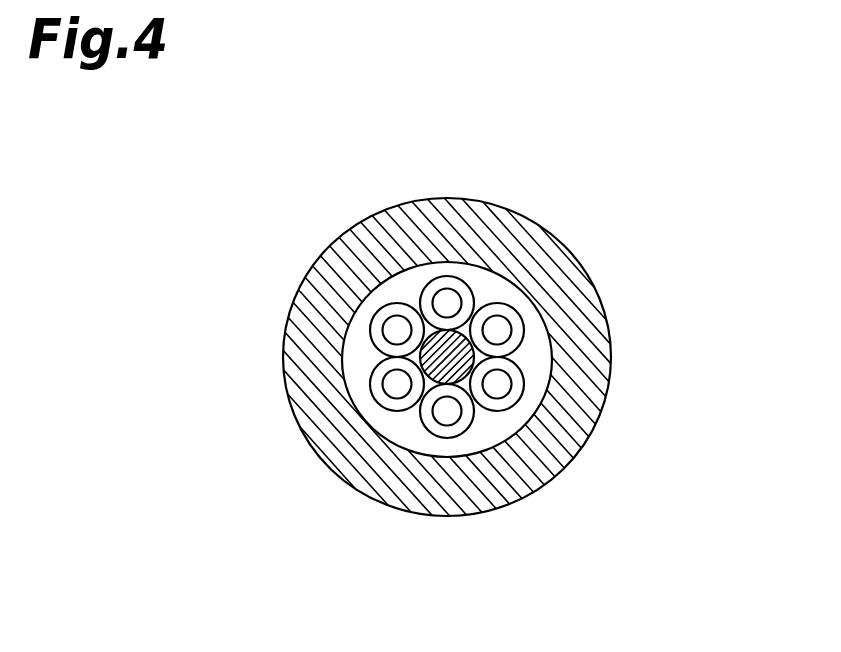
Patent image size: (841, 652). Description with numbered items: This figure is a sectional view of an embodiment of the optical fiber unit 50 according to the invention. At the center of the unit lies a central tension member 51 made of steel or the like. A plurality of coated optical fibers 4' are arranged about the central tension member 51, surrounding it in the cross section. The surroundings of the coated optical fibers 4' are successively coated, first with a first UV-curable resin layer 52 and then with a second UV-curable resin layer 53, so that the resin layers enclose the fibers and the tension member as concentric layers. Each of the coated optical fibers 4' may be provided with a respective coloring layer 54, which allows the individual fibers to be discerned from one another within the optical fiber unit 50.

The optical fiber unit 50 is at (648, 152).
The central tension member 51 is at (460, 366).
The first UV-curable resin layer 52 is at (533, 341).
The second UV-curable resin layer 53 is at (548, 478).
The coloring layer 54 is at (468, 297).
The coated optical fiber 4' is at (538, 247).